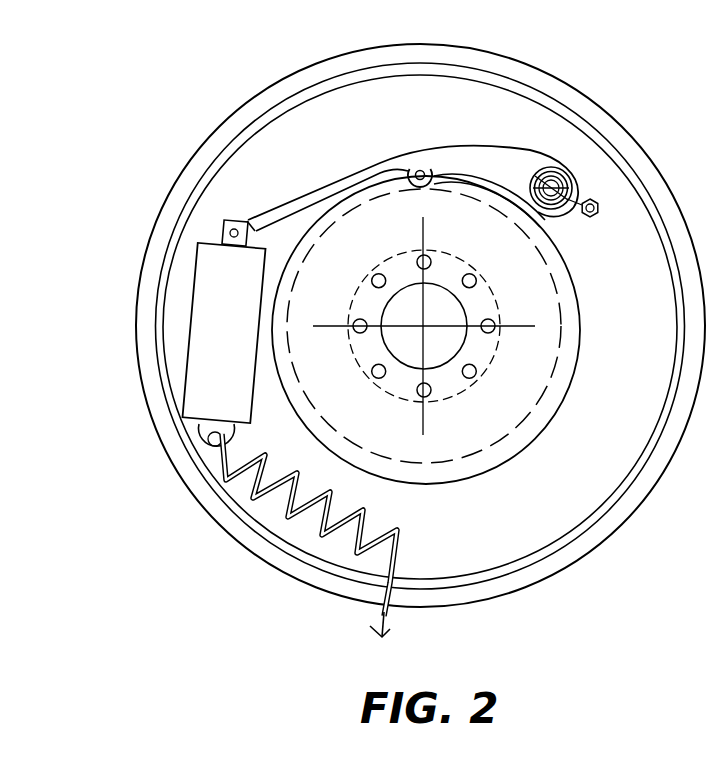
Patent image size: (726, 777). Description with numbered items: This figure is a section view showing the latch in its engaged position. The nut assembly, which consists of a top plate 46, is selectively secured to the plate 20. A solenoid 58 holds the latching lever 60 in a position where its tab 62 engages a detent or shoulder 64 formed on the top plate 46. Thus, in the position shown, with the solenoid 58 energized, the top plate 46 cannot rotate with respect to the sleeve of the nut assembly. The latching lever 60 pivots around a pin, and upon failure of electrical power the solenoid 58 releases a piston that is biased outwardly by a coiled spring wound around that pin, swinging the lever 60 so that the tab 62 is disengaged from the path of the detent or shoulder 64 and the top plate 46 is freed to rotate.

The plate 20 is at (520, 513).
The top plate 46 is at (497, 251).
The solenoid 58 is at (207, 289).
The latching lever 60 is at (267, 212).
The tab 62 is at (420, 168).
The detent or shoulder 64 is at (450, 177).